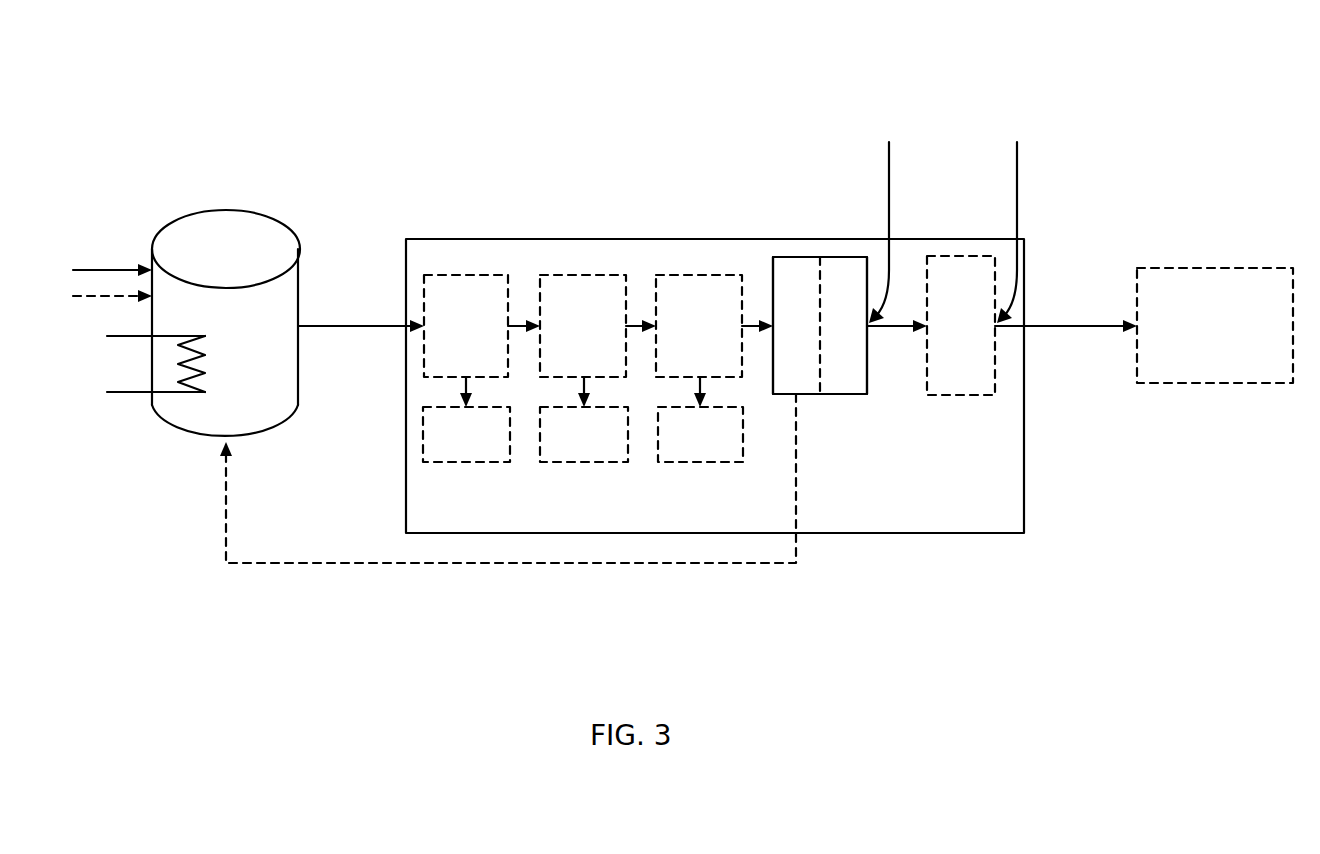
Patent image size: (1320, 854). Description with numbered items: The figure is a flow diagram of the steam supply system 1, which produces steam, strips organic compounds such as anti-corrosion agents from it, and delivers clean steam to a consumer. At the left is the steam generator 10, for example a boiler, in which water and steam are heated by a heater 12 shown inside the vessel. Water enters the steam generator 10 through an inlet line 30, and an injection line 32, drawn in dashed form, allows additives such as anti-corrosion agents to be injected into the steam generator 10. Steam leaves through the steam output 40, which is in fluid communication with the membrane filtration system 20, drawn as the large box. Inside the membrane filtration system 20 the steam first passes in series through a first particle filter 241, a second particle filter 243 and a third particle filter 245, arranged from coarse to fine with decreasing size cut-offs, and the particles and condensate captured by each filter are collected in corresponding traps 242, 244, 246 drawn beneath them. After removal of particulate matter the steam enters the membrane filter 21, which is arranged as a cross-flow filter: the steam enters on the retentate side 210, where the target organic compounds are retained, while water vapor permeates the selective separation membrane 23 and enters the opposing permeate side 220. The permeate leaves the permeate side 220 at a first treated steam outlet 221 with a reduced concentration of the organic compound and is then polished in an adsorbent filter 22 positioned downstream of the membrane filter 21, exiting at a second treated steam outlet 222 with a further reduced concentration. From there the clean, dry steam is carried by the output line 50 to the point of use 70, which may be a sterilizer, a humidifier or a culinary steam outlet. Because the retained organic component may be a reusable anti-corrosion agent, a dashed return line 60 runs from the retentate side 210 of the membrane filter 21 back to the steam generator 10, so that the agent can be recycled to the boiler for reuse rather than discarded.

The steam supply system 1 is at (178, 108).
The steam generator 10 is at (230, 220).
The heater 12 is at (140, 394).
The membrane filtration system 20 is at (413, 237).
The membrane filter 21 is at (815, 256).
The adsorbent filter 22 is at (957, 256).
The selective separation membrane 23 is at (822, 355).
The inlet line 30 is at (73, 268).
The injection line 32 is at (95, 300).
The steam output 40 is at (350, 323).
The output line 50 is at (1082, 322).
The return line 60 is at (293, 565).
The point of use 70 is at (1212, 278).
The retentate side 210 is at (798, 268).
The permeate side 220 is at (838, 268).
The first treated steam outlet 221 is at (885, 208).
The second treated steam outlet 222 is at (1012, 208).
The first particle filter 241 is at (466, 273).
The trap 242 is at (465, 463).
The second particle filter 243 is at (583, 273).
The trap 244 is at (583, 463).
The third particle filter 245 is at (700, 273).
The trap 246 is at (700, 463).